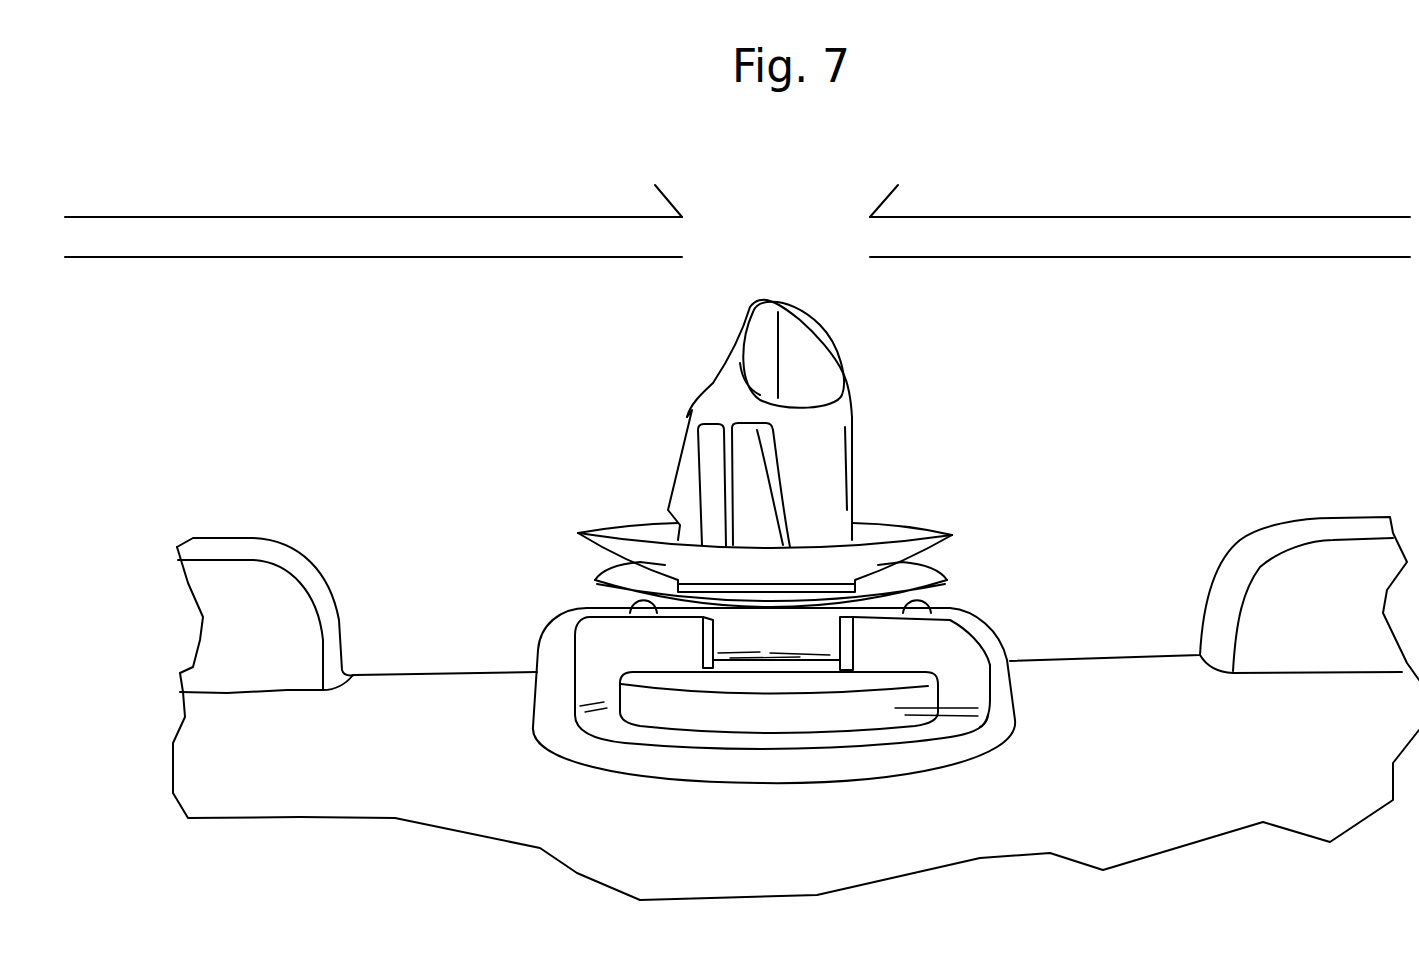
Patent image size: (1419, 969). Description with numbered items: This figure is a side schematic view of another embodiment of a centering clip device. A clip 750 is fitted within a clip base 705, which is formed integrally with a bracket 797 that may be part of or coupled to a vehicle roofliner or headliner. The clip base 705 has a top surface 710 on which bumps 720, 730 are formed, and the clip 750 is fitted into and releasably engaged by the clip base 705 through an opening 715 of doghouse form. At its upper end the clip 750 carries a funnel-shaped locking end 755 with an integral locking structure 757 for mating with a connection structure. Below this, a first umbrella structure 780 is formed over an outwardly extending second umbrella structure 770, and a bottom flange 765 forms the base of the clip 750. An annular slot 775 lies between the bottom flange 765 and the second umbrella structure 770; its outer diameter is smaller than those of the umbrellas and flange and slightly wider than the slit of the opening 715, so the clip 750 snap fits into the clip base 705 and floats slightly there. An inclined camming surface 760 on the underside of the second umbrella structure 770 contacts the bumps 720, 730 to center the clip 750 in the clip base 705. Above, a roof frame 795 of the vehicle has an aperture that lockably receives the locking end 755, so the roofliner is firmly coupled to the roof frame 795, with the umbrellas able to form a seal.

The clip base 705 is at (547, 687).
The top surface 710 is at (565, 624).
The opening 715 is at (897, 708).
The bump 720 is at (963, 607).
The bump 730 is at (732, 228).
The clip 750 is at (650, 375).
The locking end 755 is at (816, 332).
The locking structure 757 is at (850, 452).
The inclined camming surface 760 is at (963, 637).
The bottom flange 765 is at (807, 683).
The second umbrella structure 770 is at (893, 595).
The annular slot 775 is at (763, 637).
The first umbrella structure 780 is at (878, 550).
The roof frame 795 is at (1130, 242).
The bracket 797 is at (253, 548).